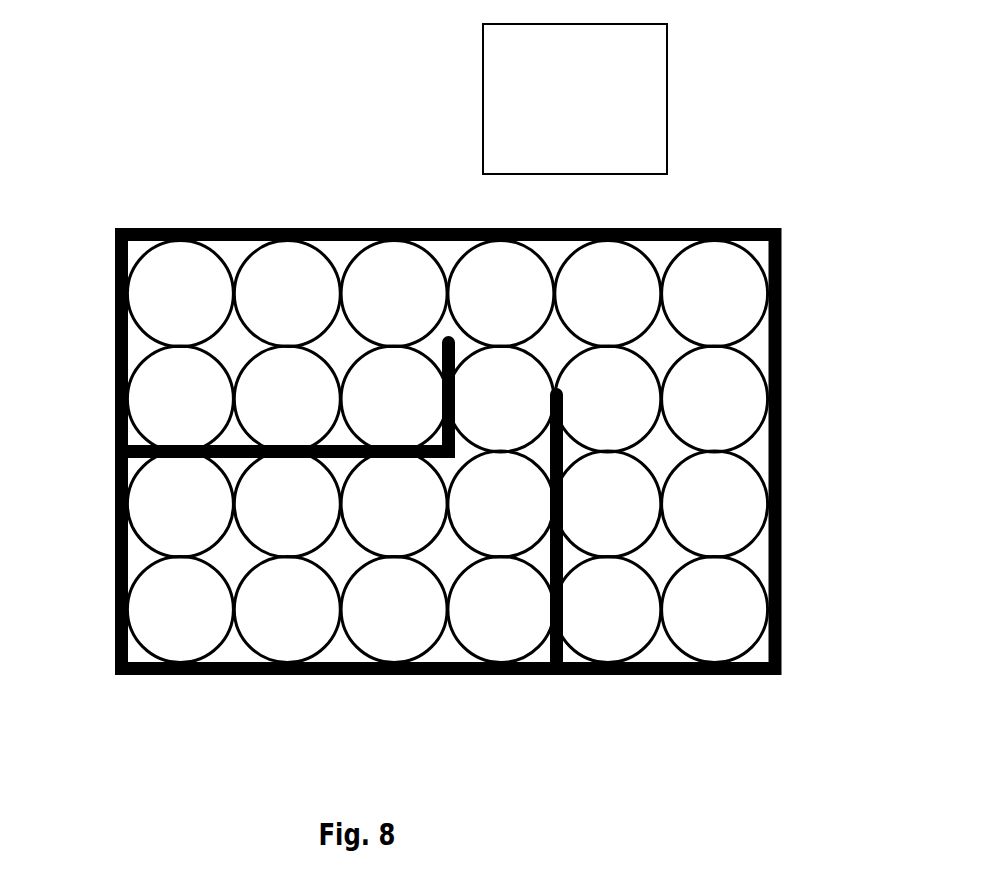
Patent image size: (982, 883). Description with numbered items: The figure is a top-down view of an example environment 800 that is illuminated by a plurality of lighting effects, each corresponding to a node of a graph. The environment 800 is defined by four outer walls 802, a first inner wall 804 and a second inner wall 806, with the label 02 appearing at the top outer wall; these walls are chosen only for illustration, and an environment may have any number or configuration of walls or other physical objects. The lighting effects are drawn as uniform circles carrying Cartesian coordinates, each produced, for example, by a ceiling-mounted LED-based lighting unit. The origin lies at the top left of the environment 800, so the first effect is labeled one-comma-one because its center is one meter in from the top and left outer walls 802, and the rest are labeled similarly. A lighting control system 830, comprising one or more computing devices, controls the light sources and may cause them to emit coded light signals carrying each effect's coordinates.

The environment 800 is at (97, 115).
The outer walls 802 is at (115, 287).
The top boundary wall 02 is at (395, 228).
The first inner wall 804 is at (550, 617).
The second inner wall 806 is at (180, 458).
The lighting control system 830 is at (575, 99).